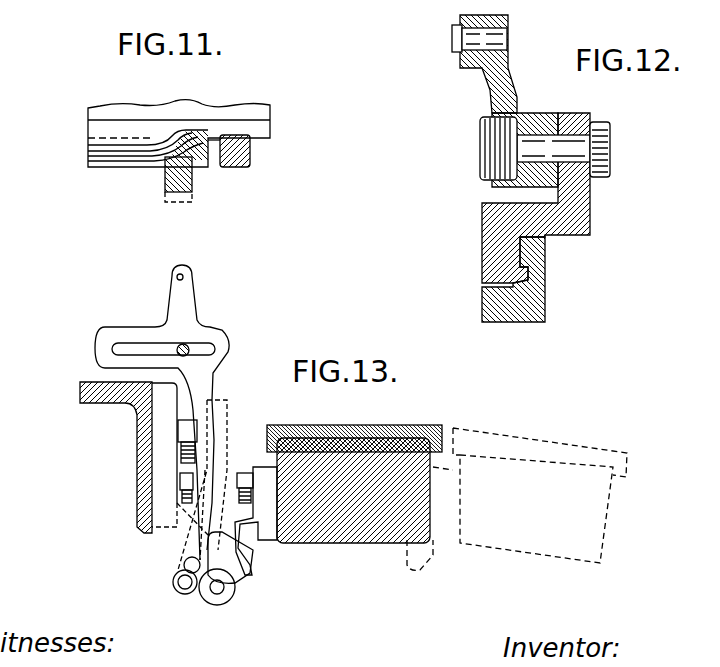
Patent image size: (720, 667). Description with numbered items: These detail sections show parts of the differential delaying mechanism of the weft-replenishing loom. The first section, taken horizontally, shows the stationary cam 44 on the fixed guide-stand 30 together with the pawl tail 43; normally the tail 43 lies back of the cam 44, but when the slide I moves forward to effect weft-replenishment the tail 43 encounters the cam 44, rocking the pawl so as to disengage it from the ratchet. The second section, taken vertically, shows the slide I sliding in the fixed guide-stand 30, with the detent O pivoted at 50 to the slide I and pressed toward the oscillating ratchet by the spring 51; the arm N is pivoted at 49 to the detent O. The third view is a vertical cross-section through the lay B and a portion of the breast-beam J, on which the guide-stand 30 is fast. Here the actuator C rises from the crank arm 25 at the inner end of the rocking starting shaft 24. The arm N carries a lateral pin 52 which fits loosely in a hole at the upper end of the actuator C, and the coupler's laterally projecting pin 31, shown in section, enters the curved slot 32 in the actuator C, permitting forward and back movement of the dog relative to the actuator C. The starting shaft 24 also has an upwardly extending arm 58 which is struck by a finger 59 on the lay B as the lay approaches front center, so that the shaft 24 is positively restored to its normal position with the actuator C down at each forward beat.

In FIG. 11, the pawl tail 43 is at (250, 157).
In FIG. 11, the stationary cam 44 is at (190, 145).
In FIG. 12, the pivot 49 is at (470, 39).
In FIG. 12, the arm N is at (465, 68).
In FIG. 12, the detent O is at (498, 77).
In FIG. 12, the pivot 50 is at (538, 148).
In FIG. 12, the spring 51 is at (482, 165).
In FIG. 12, the slide I is at (573, 213).
In FIG. 12, the fixed guide-stand 30 is at (530, 297).
In FIG. 13, the lateral pin 52 is at (192, 277).
In FIG. 13, the laterally projecting pin 31 is at (180, 347).
In FIG. 13, the curved slot 32 is at (120, 350).
In FIG. 13, the actuator C is at (222, 345).
In FIG. 13, the breast-beam J is at (115, 402).
In FIG. 13, the lay B is at (388, 457).
In FIG. 13, the finger 59 is at (253, 548).
In FIG. 13, the upwardly extending arm 58 is at (222, 555).
In FIG. 13, the crank arm 25 is at (203, 595).
In FIG. 13, the rocking shaft 24 is at (217, 587).